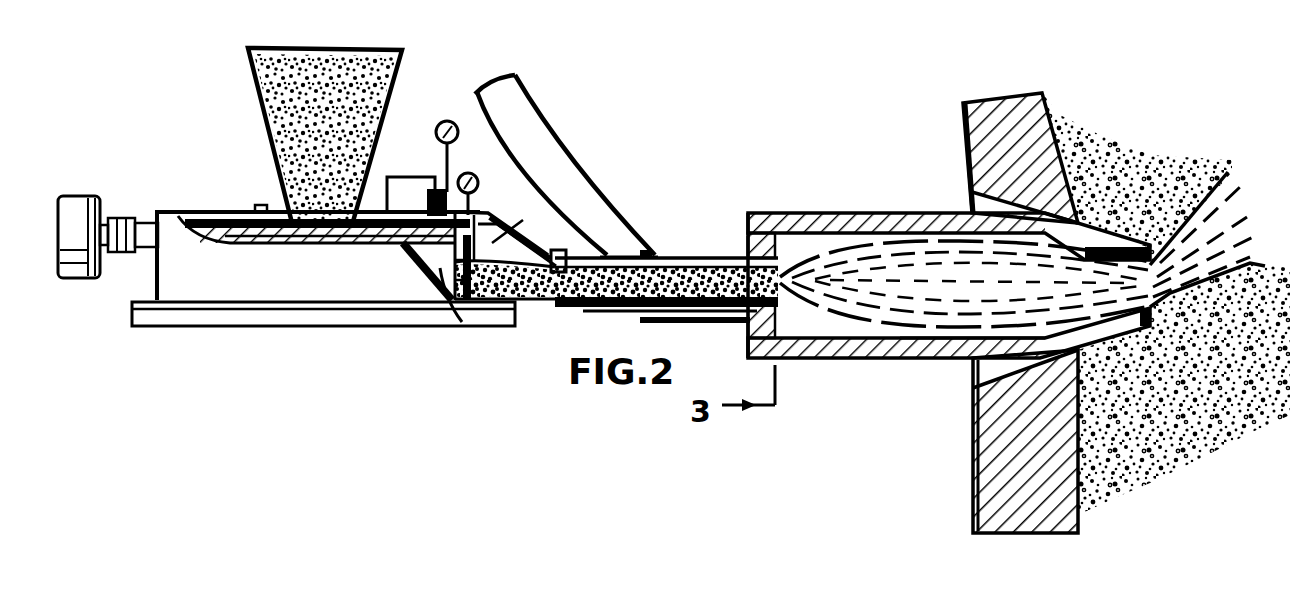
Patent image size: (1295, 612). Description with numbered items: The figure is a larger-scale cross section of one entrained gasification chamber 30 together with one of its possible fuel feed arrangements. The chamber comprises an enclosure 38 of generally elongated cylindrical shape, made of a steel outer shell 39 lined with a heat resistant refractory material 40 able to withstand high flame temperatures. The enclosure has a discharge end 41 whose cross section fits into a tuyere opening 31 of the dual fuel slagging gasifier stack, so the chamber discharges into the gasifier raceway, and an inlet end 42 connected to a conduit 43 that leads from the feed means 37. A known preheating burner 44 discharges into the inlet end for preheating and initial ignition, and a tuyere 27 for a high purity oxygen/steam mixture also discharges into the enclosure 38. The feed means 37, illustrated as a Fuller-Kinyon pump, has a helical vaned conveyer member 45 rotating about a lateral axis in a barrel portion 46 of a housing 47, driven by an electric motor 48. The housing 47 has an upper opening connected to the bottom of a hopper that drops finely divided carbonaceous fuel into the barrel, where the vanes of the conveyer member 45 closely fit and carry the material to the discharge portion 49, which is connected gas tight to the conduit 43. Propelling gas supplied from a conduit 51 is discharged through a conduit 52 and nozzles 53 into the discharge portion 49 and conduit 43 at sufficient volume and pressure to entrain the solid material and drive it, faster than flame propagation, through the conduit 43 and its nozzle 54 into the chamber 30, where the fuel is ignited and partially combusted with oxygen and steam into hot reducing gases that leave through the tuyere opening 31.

The tuyere 27 is at (522, 80).
The entrained gasification chamber 30 is at (808, 360).
The tuyere opening 31 is at (1045, 382).
The feed means 37 is at (350, 285).
The enclosure 38 is at (788, 360).
The steel outer shell 39 is at (912, 360).
The heat resistant refractory material 40 is at (870, 360).
The discharge end 41 is at (1135, 325).
The inlet end 42 is at (748, 230).
The conduit 43 is at (618, 311).
The preheating burner 44 is at (748, 335).
The helical vaned conveyer member 45 is at (403, 252).
The barrel portion 46 is at (432, 200).
The housing 47 is at (200, 212).
The electric motor 48 is at (70, 196).
The discharge portion 49 is at (503, 226).
The conduit 51 is at (462, 162).
The conduit 52 is at (447, 268).
The nozzles 53 is at (516, 300).
The nozzle 54 is at (748, 243).